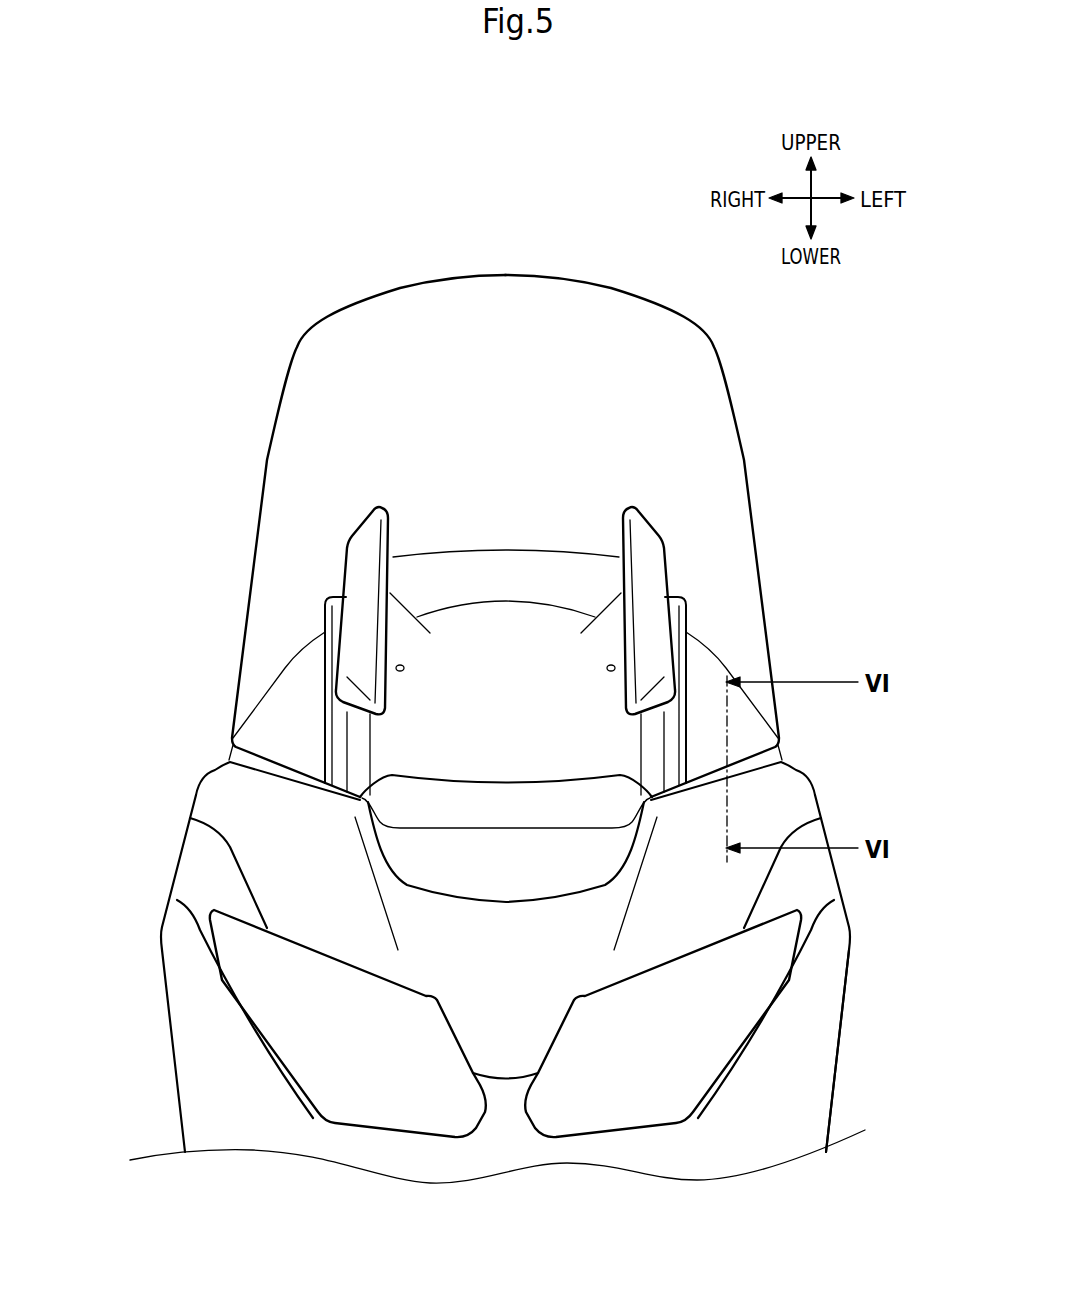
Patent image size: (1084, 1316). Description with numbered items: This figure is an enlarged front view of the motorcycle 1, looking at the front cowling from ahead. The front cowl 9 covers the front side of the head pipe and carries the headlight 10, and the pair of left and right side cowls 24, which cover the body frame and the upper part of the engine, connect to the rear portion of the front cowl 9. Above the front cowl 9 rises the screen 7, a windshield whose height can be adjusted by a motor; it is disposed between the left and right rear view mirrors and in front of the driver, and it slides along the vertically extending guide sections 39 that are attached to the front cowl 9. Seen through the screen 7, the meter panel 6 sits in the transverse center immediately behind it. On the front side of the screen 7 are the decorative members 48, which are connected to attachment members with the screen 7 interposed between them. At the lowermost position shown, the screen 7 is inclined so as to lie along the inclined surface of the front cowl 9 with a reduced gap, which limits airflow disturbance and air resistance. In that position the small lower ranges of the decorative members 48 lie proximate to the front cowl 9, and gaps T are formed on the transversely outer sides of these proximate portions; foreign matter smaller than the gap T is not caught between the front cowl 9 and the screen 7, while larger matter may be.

The motorcycle 1 is at (440, 224).
The screen 7 is at (707, 423).
The meter panel 6 is at (280, 687).
The decorative members 48 is at (360, 552).
The guide sections 39 is at (323, 660).
The gaps T is at (268, 768).
The front cowl 9 is at (293, 883).
The headlight 10 is at (268, 967).
The side cowls 24 is at (807, 1090).